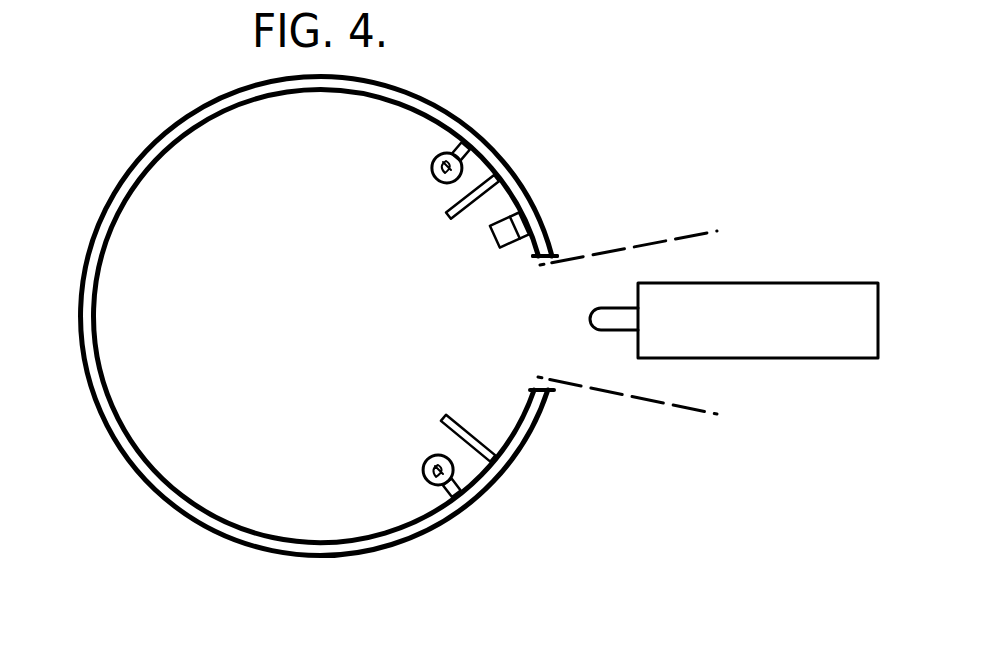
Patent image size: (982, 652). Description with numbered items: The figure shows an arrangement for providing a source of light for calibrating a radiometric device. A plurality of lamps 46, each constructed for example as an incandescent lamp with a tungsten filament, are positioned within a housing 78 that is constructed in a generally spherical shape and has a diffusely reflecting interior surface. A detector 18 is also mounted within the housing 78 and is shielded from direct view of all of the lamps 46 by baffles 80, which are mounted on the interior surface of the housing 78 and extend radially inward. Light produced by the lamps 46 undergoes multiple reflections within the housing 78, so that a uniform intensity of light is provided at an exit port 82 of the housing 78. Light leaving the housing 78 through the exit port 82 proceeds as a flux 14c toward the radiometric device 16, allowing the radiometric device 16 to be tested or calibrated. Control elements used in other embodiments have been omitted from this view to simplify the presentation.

The housing 78 is at (420, 537).
The exit port 82 is at (560, 253).
The flux 14c is at (623, 397).
The radiometric device 16 is at (768, 358).
The lamp 46 is at (430, 165).
The baffle 80 is at (448, 216).
The detector 18 is at (497, 235).